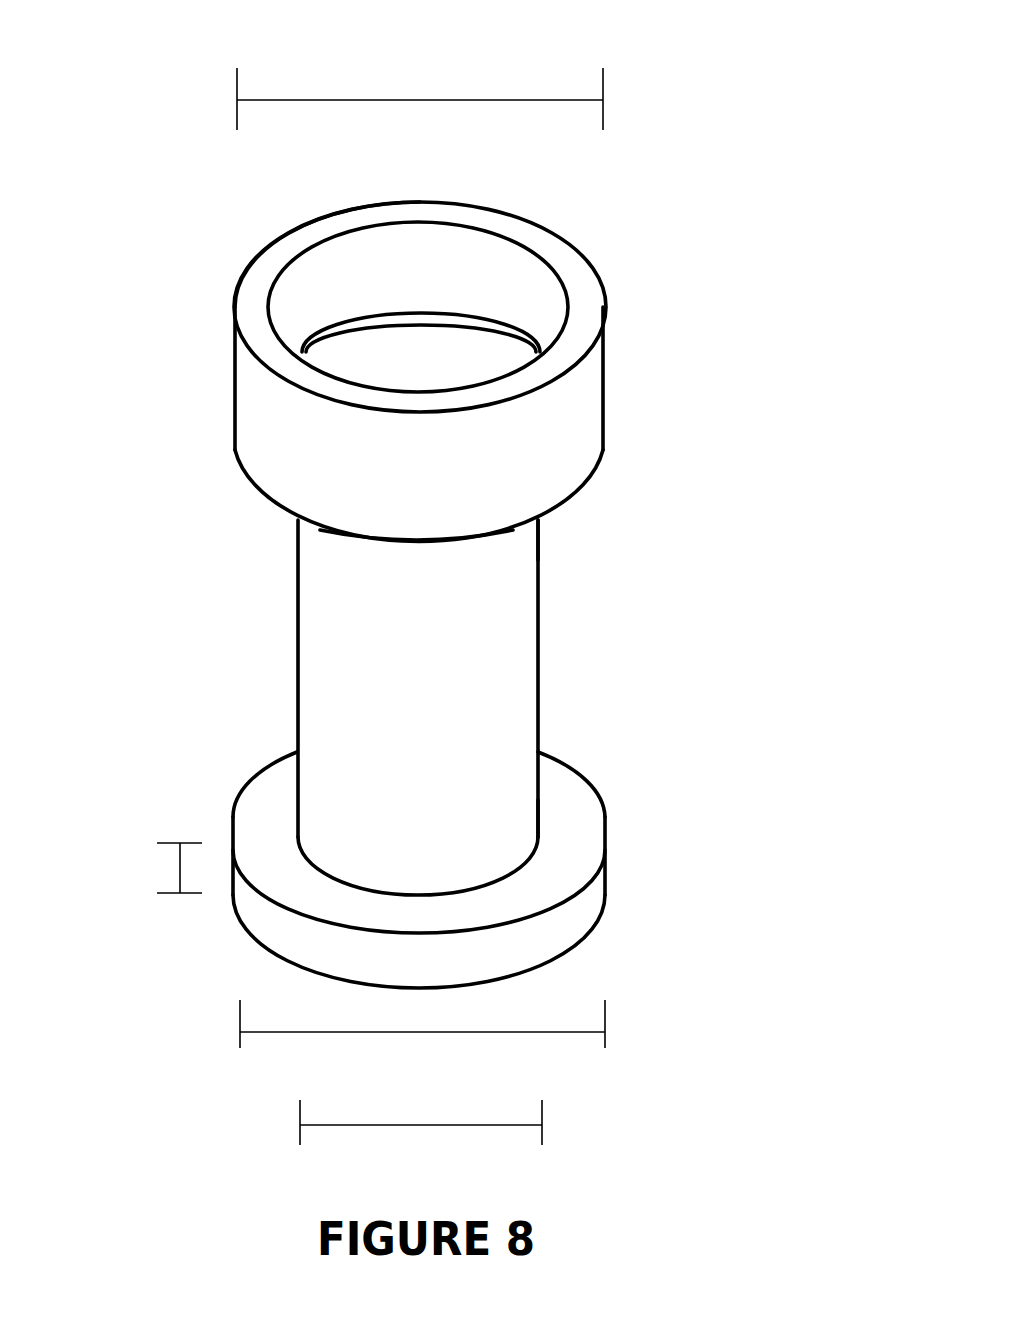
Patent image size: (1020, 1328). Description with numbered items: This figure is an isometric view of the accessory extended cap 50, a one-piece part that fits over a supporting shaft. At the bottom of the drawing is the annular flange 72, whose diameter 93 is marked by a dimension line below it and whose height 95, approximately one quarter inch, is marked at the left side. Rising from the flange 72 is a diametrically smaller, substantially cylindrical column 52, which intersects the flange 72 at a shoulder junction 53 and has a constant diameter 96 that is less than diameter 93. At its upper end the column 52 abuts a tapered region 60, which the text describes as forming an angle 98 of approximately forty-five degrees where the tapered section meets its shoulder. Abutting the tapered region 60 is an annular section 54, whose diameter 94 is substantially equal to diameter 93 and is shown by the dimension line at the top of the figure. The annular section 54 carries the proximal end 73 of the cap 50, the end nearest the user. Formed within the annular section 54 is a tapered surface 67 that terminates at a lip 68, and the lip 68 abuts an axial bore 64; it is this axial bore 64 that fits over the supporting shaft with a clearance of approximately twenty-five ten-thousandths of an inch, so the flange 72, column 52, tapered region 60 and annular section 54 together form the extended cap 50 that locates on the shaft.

The accessory extended cap 50 is at (653, 132).
The cylindrical column 52 is at (446, 732).
The shoulder junction 53 is at (533, 847).
The annular section 54 is at (439, 504).
The tapered region 60 is at (535, 536).
The axial bore 64 is at (397, 347).
The tapered surface 67 is at (503, 278).
The lip 68 is at (537, 345).
The annular flange 72 is at (592, 885).
The proximal end 73 is at (253, 300).
The diameter 93 is at (510, 1032).
The diameter 94 is at (428, 100).
The height 95 is at (177, 862).
The diameter 96 is at (388, 1125).
The angle 98 is at (375, 548).